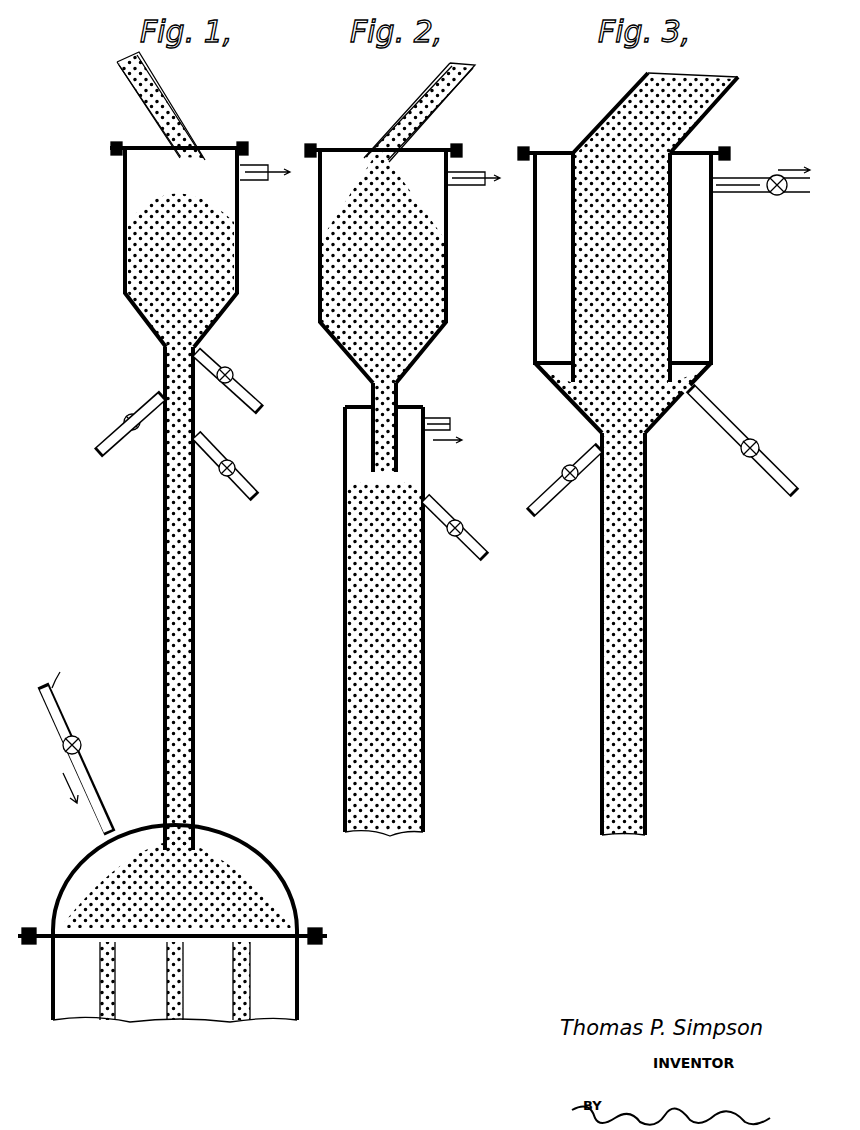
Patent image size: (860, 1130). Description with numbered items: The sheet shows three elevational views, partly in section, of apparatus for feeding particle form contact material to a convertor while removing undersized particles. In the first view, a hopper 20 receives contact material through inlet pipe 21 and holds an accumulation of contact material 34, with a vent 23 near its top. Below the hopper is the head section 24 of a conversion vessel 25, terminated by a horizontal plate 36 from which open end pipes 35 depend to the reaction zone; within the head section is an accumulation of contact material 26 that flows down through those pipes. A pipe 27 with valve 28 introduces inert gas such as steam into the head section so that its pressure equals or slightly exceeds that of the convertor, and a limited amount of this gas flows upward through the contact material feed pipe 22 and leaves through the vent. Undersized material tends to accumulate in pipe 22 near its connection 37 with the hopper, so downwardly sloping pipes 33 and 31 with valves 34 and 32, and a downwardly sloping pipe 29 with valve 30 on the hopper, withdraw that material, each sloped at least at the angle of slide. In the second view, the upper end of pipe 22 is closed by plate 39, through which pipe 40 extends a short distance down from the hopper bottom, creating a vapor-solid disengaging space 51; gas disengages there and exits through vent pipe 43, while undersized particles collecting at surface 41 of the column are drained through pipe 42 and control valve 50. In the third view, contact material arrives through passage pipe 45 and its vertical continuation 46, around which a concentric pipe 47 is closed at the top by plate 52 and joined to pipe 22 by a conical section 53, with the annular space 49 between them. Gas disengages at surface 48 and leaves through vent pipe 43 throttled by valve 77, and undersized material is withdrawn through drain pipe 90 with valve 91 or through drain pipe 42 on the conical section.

In FIG. 1, the hopper 20 is at (123, 241).
In FIG. 2, the hopper 20 is at (318, 293).
In FIG. 1, the contact material inlet pipe 21 is at (170, 104).
In FIG. 2, the contact material inlet pipe 21 is at (445, 108).
In FIG. 1, the contact material feed pipe 22 is at (195, 613).
In FIG. 2, the contact material feed pipe 22 is at (424, 617).
In FIG. 3, the contact material feed pipe 22 is at (646, 617).
In FIG. 1, the vapor vent pipe 23 is at (255, 183).
In FIG. 2, the vapor vent pipe 23 is at (470, 186).
In FIG. 1, the head section 24 is at (298, 898).
In FIG. 1, the conversion vessel 25 is at (298, 1009).
In FIG. 1, the accumulation of particle form contact material 26 is at (240, 883).
In FIG. 1, the pipe 27 is at (96, 793).
In FIG. 1, the valve 28 is at (82, 745).
In FIG. 1, the downwardly sloping pipe 29 is at (244, 392).
In FIG. 1, the valve 30 is at (232, 368).
In FIG. 1, the downwardly sloping pipe 31 is at (248, 489).
In FIG. 1, the valve 32 is at (235, 462).
In FIG. 1, the downwardly sloping pipe 33 is at (106, 461).
In FIG. 1, the accumulation of contact material 34 is at (200, 274).
In FIG. 1, the open end pipes 35 is at (100, 980).
In FIG. 1, the plate 36 is at (62, 938).
In FIG. 1, the connection 37 is at (162, 351).
In FIG. 2, the plate 39 is at (412, 407).
In FIG. 2, the pipe 40 is at (371, 390).
In FIG. 2, the surface 41 is at (362, 484).
In FIG. 2, the pipe 42 is at (448, 512).
In FIG. 3, the pipe 42 is at (722, 414).
In FIG. 2, the vent pipe 43 is at (450, 424).
In FIG. 3, the vent pipe 43 is at (760, 176).
In FIG. 3, the contact material passage pipe 45 is at (720, 104).
In FIG. 3, the vertical continuation pipe 46 is at (572, 242).
In FIG. 3, the pipe 47 is at (713, 288).
In FIG. 3, the surface 48 is at (682, 380).
In FIG. 3, the annular space 49 is at (540, 291).
In FIG. 2, the control valve 50 is at (464, 528).
In FIG. 3, the control valve 50 is at (760, 444).
In FIG. 2, the vapor-solid disengaging space 51 is at (358, 437).
In FIG. 3, the plate 52 is at (557, 150).
In FIG. 3, the conical section 53 is at (573, 408).
In FIG. 3, the valve 77 is at (779, 195).
In FIG. 3, the drain pipe 90 is at (552, 488).
In FIG. 3, the valve 91 is at (570, 465).